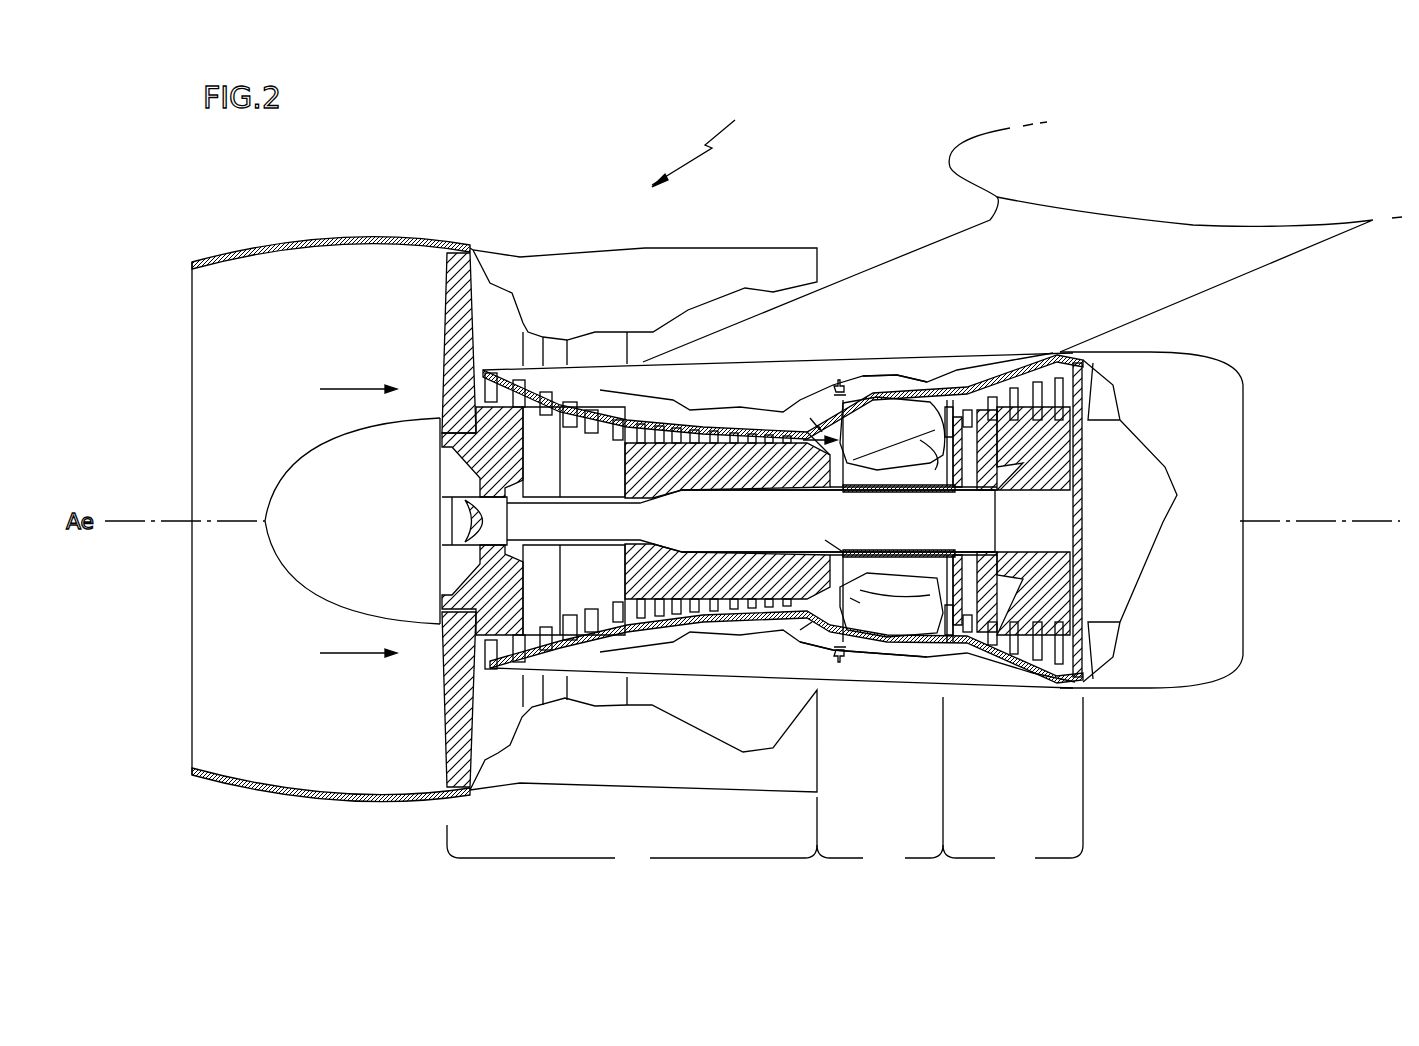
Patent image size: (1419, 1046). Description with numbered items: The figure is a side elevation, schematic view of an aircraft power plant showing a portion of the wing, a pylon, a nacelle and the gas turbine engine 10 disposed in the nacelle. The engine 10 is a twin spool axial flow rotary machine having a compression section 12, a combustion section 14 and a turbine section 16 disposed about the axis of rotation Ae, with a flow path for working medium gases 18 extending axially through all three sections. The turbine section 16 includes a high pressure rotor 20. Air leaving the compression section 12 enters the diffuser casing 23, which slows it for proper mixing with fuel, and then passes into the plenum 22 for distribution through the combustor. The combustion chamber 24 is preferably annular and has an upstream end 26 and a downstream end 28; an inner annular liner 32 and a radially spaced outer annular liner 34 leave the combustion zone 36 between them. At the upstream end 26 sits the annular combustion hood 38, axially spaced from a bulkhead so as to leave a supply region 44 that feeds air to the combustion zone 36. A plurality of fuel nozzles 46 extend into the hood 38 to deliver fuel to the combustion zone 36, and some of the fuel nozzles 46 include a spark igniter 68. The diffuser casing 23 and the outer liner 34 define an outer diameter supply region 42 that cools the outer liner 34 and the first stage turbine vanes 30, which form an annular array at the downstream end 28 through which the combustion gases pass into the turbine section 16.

The gas turbine engine 10 is at (709, 140).
The compression section 12 is at (632, 834).
The combustion section 14 is at (880, 784).
The turbine section 16 is at (1013, 784).
The working medium gases 18 is at (795, 435).
The high pressure rotor 20 is at (970, 515).
The plenum 22 is at (810, 418).
The diffuser casing 23 is at (820, 427).
The combustion chamber 24 is at (857, 395).
The upstream end 26 is at (823, 465).
The downstream end 28 is at (948, 460).
The first stage turbine vanes 30 is at (946, 407).
The inner annular liner 32 is at (810, 437).
The outer annular liner 34 is at (875, 420).
The combustion zone 36 is at (870, 441).
The combustion hood 38 is at (800, 631).
The outer diameter supply region 42 is at (827, 540).
The supply region 44 is at (853, 597).
The fuel nozzle 46 is at (840, 620).
The spark igniter 68 is at (797, 610).